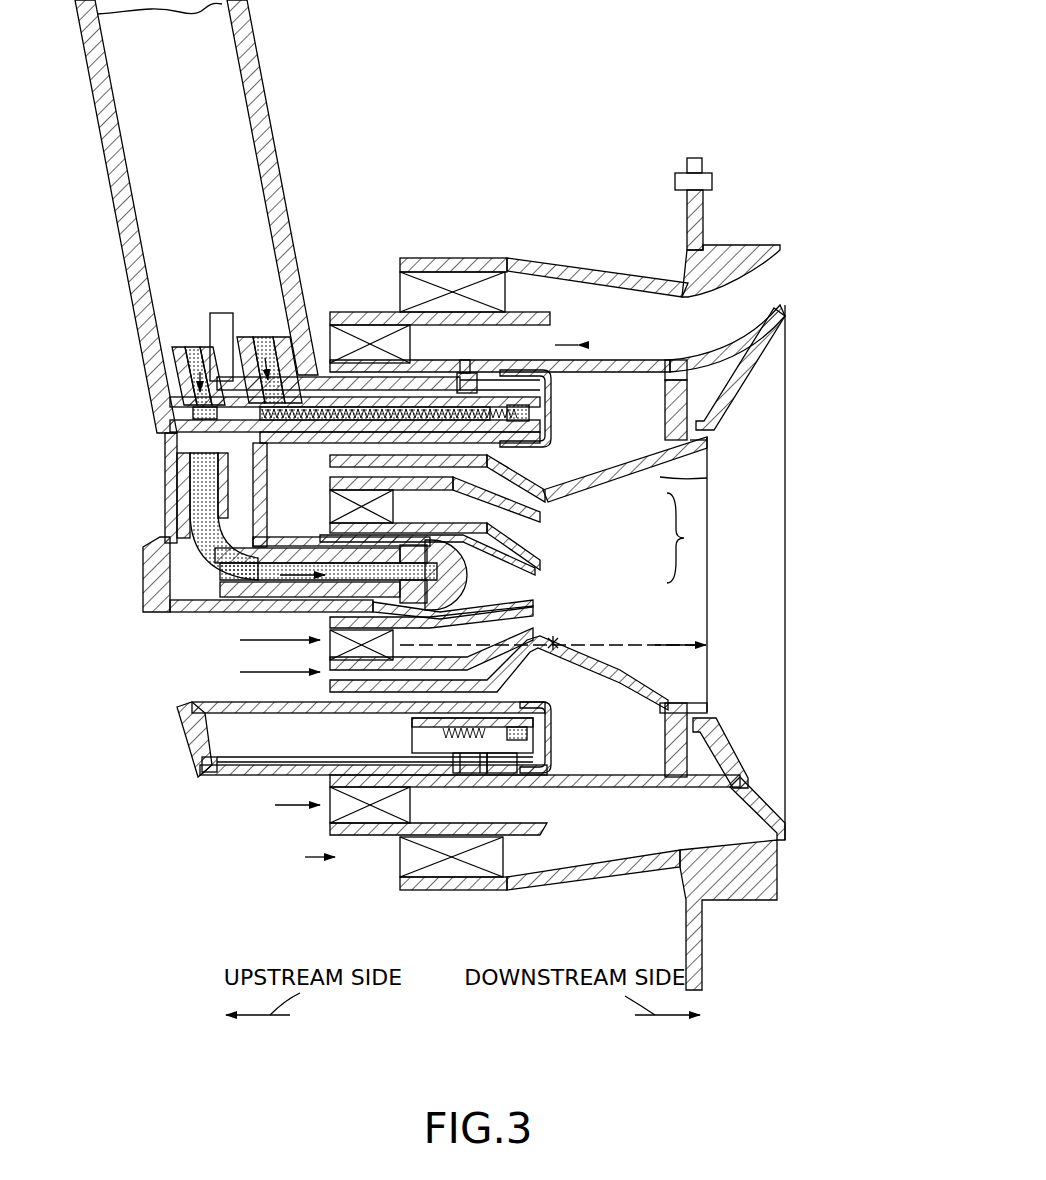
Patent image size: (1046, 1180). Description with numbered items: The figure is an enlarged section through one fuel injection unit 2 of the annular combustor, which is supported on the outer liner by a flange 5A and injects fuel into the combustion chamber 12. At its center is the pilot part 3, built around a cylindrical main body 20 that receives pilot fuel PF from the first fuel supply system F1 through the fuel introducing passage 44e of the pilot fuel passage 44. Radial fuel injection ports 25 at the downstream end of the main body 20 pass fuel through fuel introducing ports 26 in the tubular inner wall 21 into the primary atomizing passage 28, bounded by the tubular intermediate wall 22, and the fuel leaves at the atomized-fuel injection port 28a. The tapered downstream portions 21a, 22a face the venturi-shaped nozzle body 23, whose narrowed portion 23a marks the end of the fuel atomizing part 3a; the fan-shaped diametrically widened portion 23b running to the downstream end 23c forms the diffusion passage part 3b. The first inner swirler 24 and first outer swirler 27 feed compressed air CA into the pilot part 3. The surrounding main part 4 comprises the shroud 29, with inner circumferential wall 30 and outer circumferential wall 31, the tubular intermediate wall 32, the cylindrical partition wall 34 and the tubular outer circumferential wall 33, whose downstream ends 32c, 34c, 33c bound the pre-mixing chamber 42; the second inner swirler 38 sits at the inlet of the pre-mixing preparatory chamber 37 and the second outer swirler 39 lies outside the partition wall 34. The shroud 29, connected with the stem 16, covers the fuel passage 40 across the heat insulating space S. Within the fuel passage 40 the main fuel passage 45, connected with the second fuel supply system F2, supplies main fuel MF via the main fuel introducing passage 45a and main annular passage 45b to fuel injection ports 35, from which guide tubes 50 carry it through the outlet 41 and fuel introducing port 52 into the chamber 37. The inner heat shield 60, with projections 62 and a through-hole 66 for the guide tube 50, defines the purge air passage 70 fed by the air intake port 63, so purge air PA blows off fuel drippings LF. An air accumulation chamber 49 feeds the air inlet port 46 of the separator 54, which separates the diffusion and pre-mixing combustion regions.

The fuel injection unit 2 is at (685, 538).
The pilot part 3 is at (582, 575).
The fuel atomizing part 3a is at (550, 644).
The diffusion passage part 3b is at (660, 644).
The main part 4 is at (578, 345).
The flange 5A is at (700, 160).
The combustion chamber 12 is at (814, 617).
The stem 16 is at (138, 350).
The main body 20 is at (160, 615).
The tubular inner wall 21 is at (330, 626).
The downstream portion of tubular inner wall 21a is at (545, 565).
The tubular intermediate wall 22 is at (330, 654).
The downstream portion of tubular intermediate wall 22a is at (545, 535).
The nozzle body 23 is at (330, 460).
The narrowed portion 23a is at (545, 515).
The diametrically widened portion 23b is at (708, 480).
The downstream end of nozzle body 23c is at (708, 442).
The first inner swirler 24 is at (330, 512).
The fuel injection port 25 is at (470, 568).
The fuel introducing port 26 is at (468, 608).
The first outer swirler 27 is at (330, 483).
The primary atomizing passage 28 is at (545, 612).
The atomized-fuel injection port 28a is at (545, 632).
The shroud 29 is at (248, 778).
The inner circumferential wall 30 is at (200, 704).
The outer circumferential wall 31 is at (275, 778).
The tubular intermediate wall 32 is at (366, 330).
The downstream end of tubular intermediate wall 32c is at (784, 305).
The tubular outer circumferential wall 33 is at (437, 258).
The downstream end of tubular outer circumferential wall 33c is at (782, 245).
The cylindrical partition wall 34 is at (530, 268).
The downstream end of cylindrical partition wall 34c is at (552, 322).
The fuel injection port 35 is at (532, 415).
The pre-mixing preparatory chamber 37 is at (449, 354).
The second inner swirler 38 is at (356, 312).
The second outer swirler 39 is at (430, 290).
The fuel passage 40 is at (520, 446).
The outlet 41 is at (392, 805).
The pre-mixing chamber 42 is at (695, 337).
The pilot fuel passage 44 is at (551, 722).
The fuel introducing passage 44e is at (198, 487).
The main fuel passage 45 is at (253, 420).
The main fuel introducing passage 45a is at (322, 375).
The main annular passage 45b is at (508, 706).
The air inlet port 46 is at (668, 758).
The air accumulation chamber 49 is at (621, 739).
The guide tube 50 is at (475, 372).
The fuel introducing port 52 is at (464, 358).
The separator 54 is at (730, 392).
The inner heat shield 60 is at (551, 392).
The projection 62 is at (202, 760).
The air intake port 63 is at (215, 778).
The through-hole 66 is at (470, 775).
The purge air passage 70 is at (280, 757).
The first fuel supply system F1 is at (190, 345).
The second fuel supply system F2 is at (258, 336).
The fuel PF is at (205, 579).
The fuel MF is at (362, 728).
The fuel drippings LF is at (412, 758).
The compressed air CA is at (240, 640).
The purge air PA is at (235, 778).
The heat insulating space S is at (291, 745).